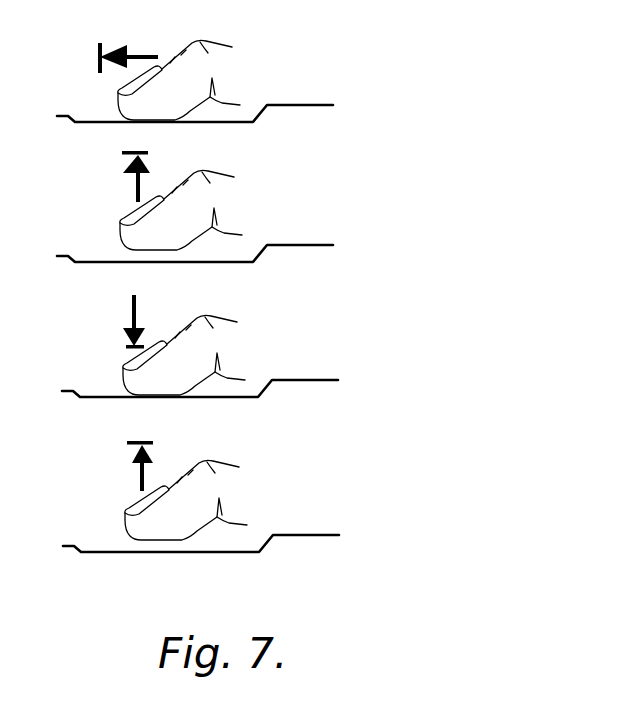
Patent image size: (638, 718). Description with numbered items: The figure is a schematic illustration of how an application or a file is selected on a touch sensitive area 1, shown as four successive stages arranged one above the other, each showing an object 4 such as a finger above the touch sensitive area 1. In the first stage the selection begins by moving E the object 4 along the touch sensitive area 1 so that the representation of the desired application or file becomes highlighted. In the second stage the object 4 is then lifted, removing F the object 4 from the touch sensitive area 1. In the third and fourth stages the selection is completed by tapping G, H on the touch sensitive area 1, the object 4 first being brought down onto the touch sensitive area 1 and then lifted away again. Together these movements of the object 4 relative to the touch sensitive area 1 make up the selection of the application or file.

The touch sensitive area 1 is at (105, 263).
The object 4 is at (235, 70).
The moving E is at (128, 49).
The removing F is at (130, 179).
The tapping G is at (125, 322).
The tapping H is at (133, 470).